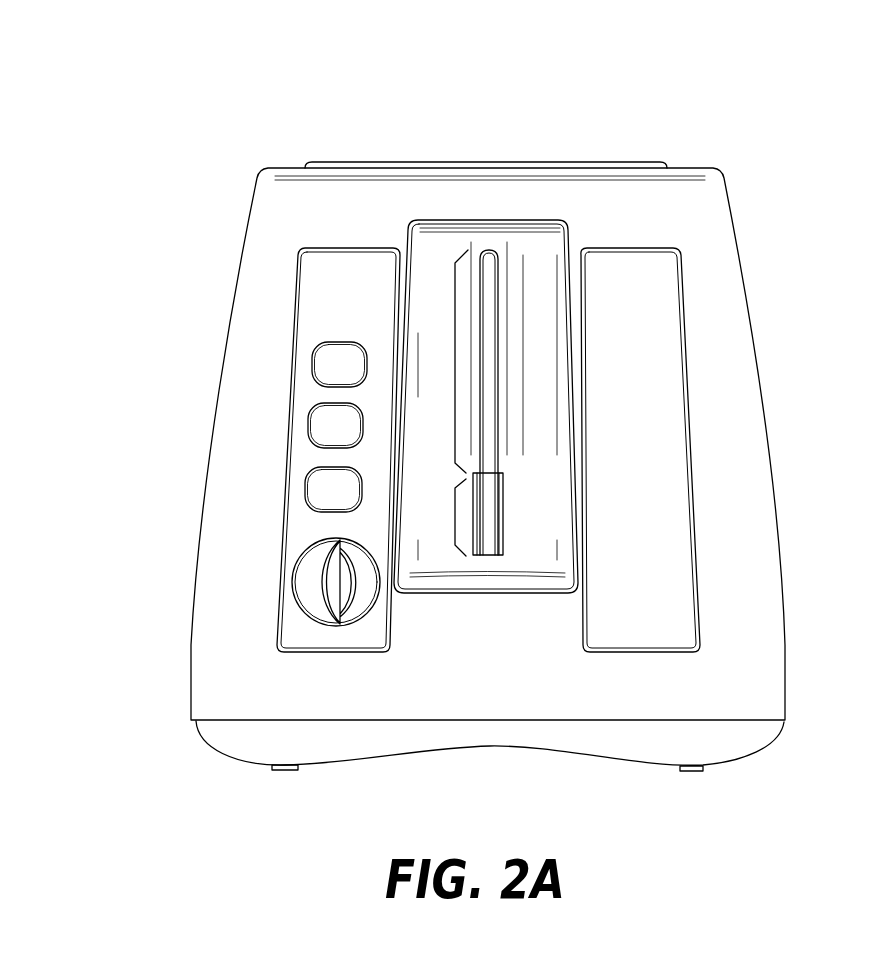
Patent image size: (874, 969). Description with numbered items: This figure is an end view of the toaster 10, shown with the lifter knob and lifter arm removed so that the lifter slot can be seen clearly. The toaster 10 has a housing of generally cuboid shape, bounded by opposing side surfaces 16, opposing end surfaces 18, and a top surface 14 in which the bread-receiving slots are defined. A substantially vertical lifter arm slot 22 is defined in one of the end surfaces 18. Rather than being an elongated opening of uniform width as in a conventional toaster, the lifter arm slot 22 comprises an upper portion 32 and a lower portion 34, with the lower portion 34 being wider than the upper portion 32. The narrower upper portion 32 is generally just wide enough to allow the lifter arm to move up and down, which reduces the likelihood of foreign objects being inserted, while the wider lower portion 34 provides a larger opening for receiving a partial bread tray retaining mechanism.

The toaster 10 is at (525, 458).
The top surface 14 is at (537, 160).
The side surfaces 16 is at (779, 499).
The end surfaces 18 is at (429, 703).
The lifter arm slot 22 is at (498, 313).
The upper portion 32 is at (455, 333).
The lower portion 34 is at (453, 515).